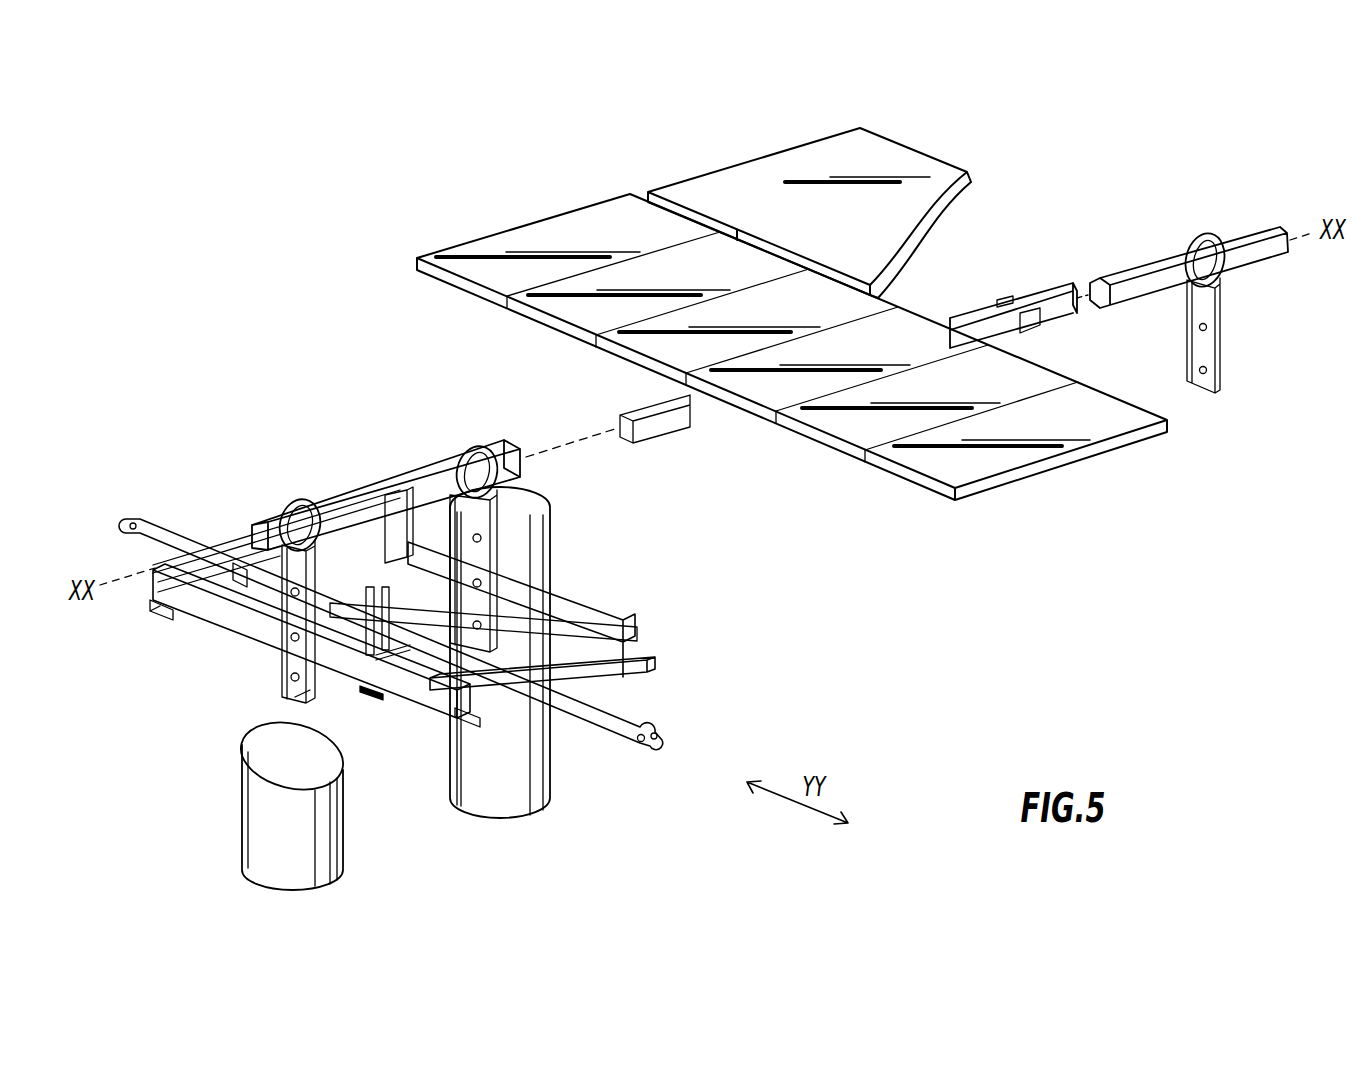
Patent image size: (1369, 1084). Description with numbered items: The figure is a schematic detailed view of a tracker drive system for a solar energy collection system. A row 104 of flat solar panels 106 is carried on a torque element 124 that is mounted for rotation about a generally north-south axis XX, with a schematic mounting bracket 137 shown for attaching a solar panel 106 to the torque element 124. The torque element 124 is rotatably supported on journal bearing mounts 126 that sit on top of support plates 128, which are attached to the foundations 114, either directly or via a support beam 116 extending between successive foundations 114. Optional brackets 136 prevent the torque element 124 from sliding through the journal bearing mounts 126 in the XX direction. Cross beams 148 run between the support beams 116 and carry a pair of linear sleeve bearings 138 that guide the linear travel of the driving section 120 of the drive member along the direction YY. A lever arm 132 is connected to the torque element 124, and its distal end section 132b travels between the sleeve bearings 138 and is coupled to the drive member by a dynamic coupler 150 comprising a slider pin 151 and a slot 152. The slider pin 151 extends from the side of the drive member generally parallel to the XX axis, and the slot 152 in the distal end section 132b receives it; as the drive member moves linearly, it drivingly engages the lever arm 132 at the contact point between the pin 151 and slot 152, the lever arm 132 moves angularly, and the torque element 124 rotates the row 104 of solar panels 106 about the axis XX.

The row of solar panels 104 is at (1096, 479).
The solar panel 106 is at (720, 205).
The foundation 114 is at (262, 834).
The support beam 116 is at (505, 597).
The driving section 120 is at (630, 720).
The torque element 124 is at (1105, 280).
The journal bearing mount 126 is at (1200, 238).
The support plate 128 is at (1207, 345).
The lever arm 132 is at (384, 533).
The distal end section 132b is at (407, 617).
The bracket 136 is at (305, 500).
The mounting bracket 137 is at (1045, 320).
The linear sleeve bearing 138 is at (217, 563).
The cross beam 148 is at (173, 613).
The dynamic coupler 150 is at (313, 693).
The slider pin 151 is at (358, 692).
The slot 152 is at (375, 570).